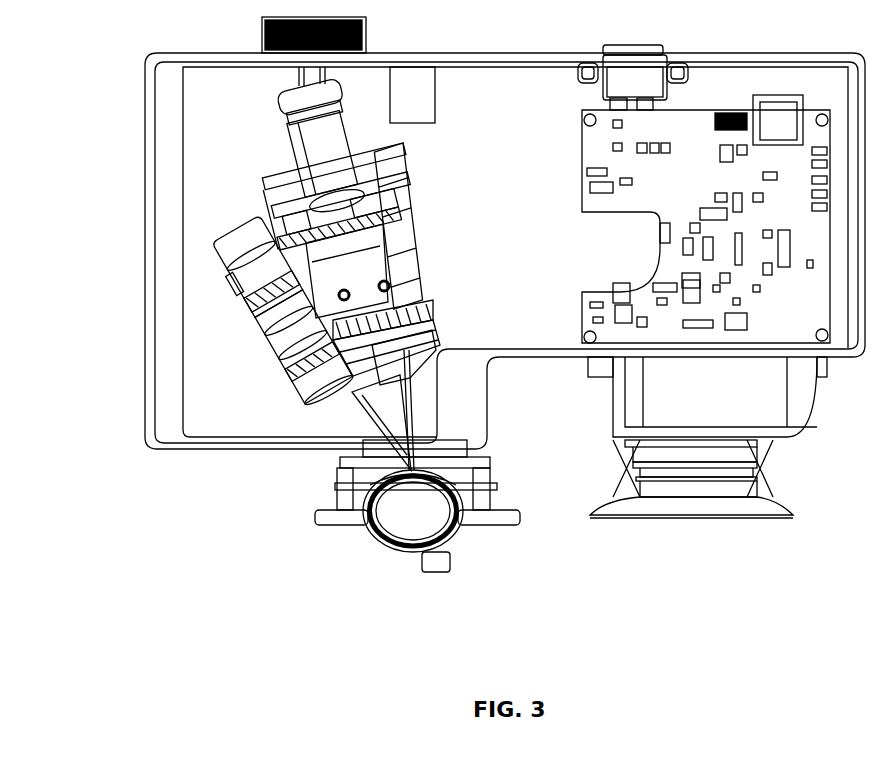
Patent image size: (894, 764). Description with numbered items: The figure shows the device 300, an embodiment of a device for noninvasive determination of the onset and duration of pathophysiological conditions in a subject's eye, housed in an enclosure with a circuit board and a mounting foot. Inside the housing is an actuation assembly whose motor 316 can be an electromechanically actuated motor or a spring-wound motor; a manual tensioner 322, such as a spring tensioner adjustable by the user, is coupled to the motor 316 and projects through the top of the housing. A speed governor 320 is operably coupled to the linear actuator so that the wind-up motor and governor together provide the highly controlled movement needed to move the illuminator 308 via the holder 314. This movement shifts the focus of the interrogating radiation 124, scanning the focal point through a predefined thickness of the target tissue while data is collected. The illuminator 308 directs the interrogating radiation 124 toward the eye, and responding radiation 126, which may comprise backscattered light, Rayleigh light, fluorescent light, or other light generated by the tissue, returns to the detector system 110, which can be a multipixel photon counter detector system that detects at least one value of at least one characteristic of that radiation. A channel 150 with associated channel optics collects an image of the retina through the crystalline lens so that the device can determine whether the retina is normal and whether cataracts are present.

The device 300 is at (96, 199).
The manual tensioner 322 is at (366, 38).
The motor 316 is at (297, 157).
The speed governor 320 is at (298, 194).
The holder 314 is at (406, 242).
The illuminator 308 is at (408, 284).
The channel 150 is at (242, 281).
The detector system 110 is at (266, 341).
The interrogating radiation 124 is at (408, 420).
The responding radiation 126 is at (373, 413).